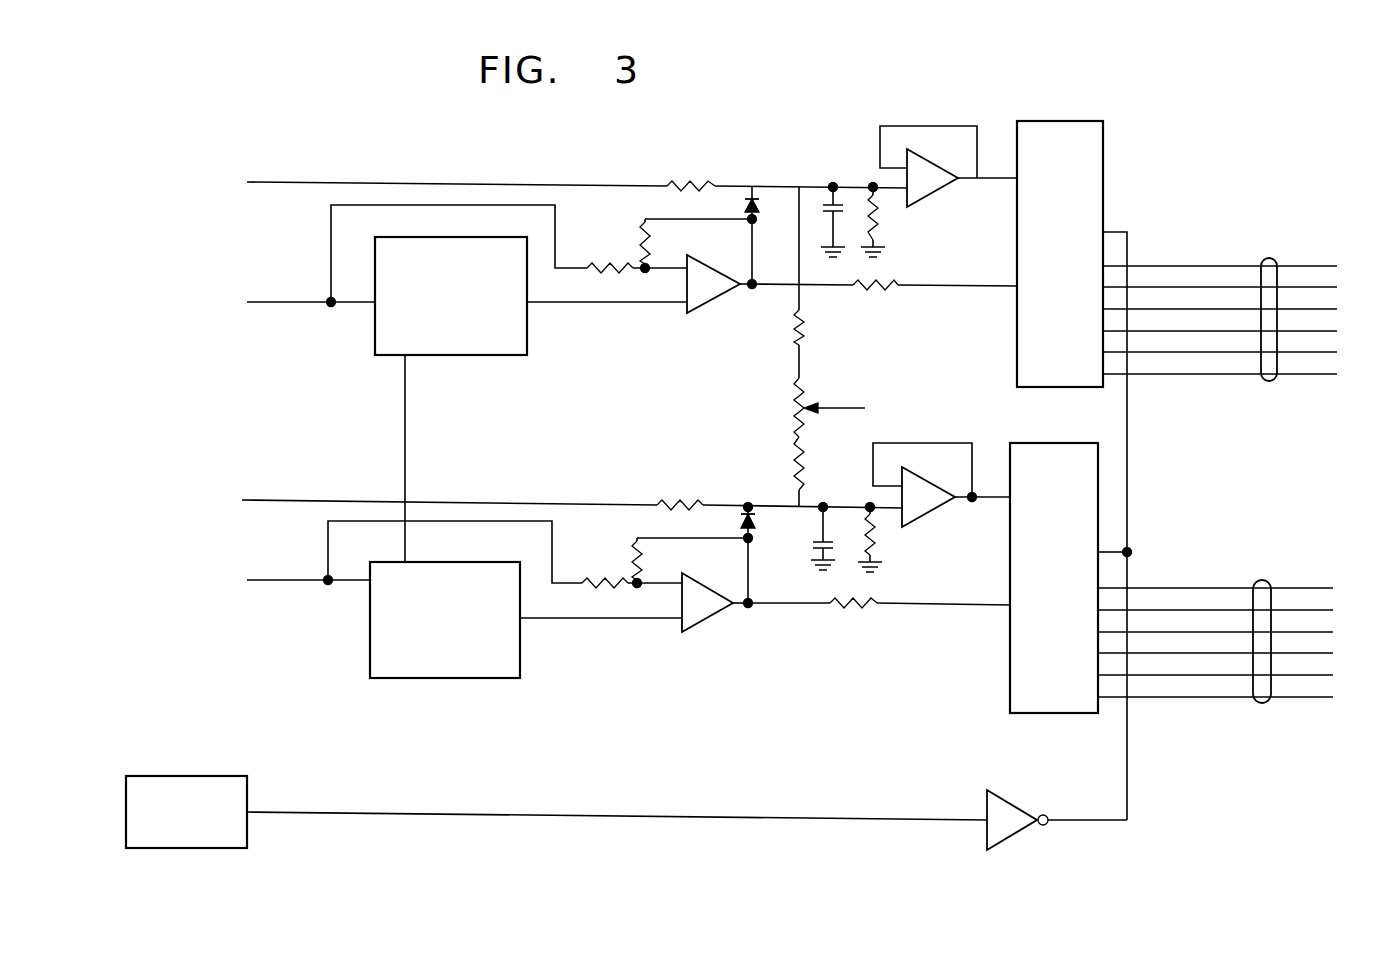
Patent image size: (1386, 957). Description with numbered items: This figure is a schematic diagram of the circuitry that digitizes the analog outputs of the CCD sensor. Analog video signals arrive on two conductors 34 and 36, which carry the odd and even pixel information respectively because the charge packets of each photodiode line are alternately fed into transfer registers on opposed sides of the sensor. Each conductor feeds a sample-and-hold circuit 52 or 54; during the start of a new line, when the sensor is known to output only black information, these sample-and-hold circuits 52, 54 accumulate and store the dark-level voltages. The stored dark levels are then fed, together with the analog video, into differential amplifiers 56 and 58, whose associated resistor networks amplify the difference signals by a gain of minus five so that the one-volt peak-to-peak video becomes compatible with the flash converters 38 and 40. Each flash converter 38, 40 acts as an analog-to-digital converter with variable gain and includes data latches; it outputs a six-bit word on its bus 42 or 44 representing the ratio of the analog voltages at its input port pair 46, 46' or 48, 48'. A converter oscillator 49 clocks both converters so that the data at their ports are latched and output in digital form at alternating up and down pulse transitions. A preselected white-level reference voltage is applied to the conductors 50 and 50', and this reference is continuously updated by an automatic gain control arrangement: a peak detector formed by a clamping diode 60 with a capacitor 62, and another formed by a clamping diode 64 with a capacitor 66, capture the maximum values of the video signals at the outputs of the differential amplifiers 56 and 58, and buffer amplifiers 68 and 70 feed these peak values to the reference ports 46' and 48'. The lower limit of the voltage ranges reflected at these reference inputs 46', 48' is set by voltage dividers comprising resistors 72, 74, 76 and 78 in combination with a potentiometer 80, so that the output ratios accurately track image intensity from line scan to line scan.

The conductor 34 is at (287, 304).
The conductor 36 is at (282, 582).
The flash converter 38 is at (1103, 146).
The flash converter 40 is at (1044, 443).
The bus 42 is at (1270, 258).
The bus 44 is at (1262, 580).
The input port 46 is at (912, 309).
The reference input port 46' is at (1050, 162).
The input port 48 is at (909, 625).
The reference input port 48' is at (1043, 487).
The converter oscillator 49 is at (208, 776).
The conductor 50 is at (495, 495).
The conductor 50' is at (577, 170).
The sample-and-hold circuit 52 is at (527, 338).
The sample-and-hold circuit 54 is at (520, 660).
The differential amplifier 56 is at (722, 300).
The differential amplifier 58 is at (716, 620).
The clamping diode 60 is at (759, 204).
The capacitor 62 is at (835, 200).
The clamping diode 64 is at (743, 520).
The capacitor 66 is at (814, 546).
The buffer amplifier 68 is at (944, 185).
The buffer amplifier 70 is at (930, 512).
The resistor 72 is at (878, 220).
The resistor 74 is at (804, 326).
The resistor 76 is at (817, 454).
The resistor 78 is at (875, 538).
The potentiometer 80 is at (803, 396).